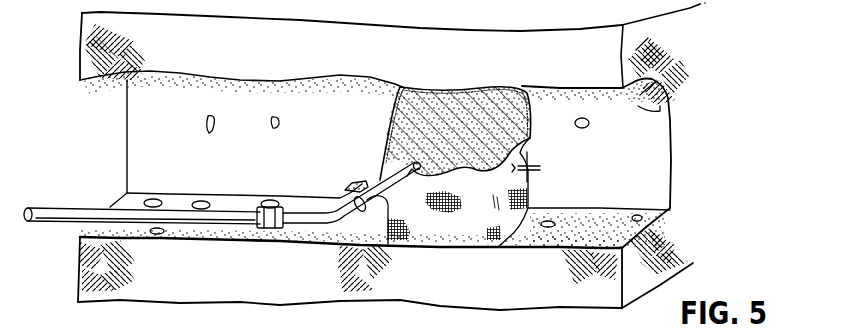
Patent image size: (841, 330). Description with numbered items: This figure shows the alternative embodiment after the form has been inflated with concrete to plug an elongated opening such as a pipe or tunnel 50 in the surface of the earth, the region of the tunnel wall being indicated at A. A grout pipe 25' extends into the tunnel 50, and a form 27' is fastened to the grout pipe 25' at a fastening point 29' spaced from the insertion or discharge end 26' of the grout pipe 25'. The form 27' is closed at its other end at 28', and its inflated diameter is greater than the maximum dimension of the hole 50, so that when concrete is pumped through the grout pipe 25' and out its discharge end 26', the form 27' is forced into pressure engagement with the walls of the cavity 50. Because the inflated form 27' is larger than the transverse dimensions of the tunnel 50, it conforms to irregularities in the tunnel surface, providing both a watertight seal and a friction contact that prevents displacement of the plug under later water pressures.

The region of vessel wall A is at (78, 66).
The pipe or tunnel 50 is at (240, 100).
The grout pipe 25' is at (221, 219).
The insertion or discharge end 26' is at (421, 204).
The form 27' is at (436, 165).
The closed end of form 28' is at (553, 160).
The fastening point 29' is at (457, 214).